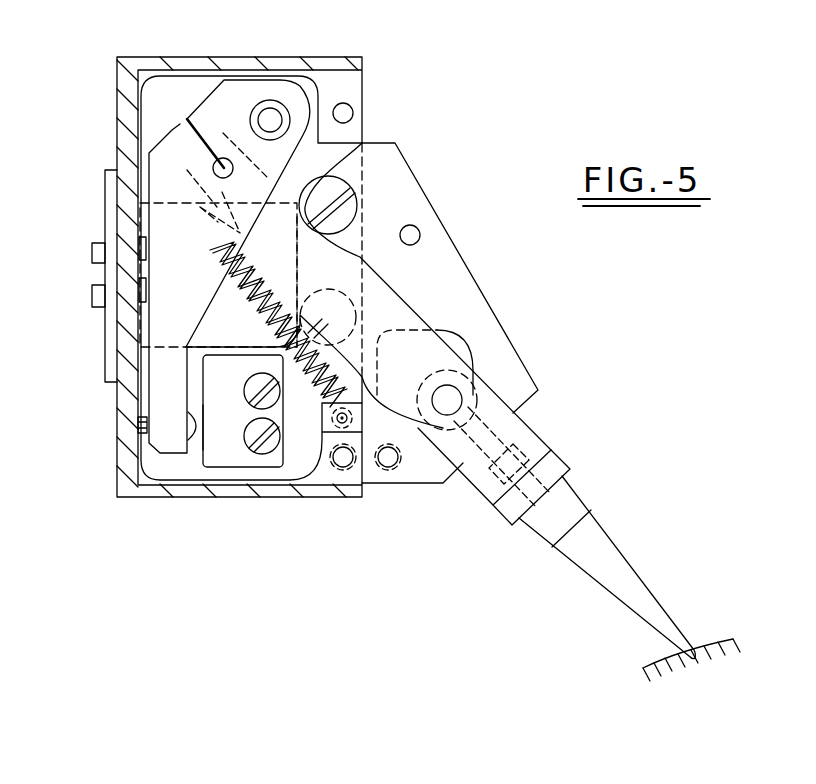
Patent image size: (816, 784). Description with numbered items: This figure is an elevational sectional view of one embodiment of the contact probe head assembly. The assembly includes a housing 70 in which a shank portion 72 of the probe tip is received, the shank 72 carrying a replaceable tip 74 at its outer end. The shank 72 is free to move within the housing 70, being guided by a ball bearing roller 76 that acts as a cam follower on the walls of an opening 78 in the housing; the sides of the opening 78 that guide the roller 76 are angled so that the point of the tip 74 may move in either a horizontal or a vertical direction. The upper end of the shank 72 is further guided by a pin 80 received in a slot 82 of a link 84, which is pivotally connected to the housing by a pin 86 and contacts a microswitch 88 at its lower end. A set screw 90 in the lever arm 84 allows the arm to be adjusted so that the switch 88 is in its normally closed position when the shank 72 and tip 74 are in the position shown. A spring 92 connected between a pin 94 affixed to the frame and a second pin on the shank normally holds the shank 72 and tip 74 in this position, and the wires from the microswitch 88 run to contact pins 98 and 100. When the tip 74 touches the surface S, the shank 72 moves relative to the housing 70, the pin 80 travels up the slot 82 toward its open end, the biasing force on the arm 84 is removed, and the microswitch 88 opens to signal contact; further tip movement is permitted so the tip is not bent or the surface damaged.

The housing 70 is at (121, 109).
The shank portion 72 is at (385, 297).
The replaceable tip 74 is at (617, 559).
The ball bearing roller 76 is at (453, 377).
The opening 78 is at (433, 330).
The pin 80 is at (233, 173).
The slot 82 is at (188, 120).
The link 84 is at (230, 88).
The pin 86 is at (273, 112).
The microswitch 88 is at (242, 462).
The set screw 90 is at (120, 453).
The spring 92 is at (283, 430).
The pin 94 is at (352, 424).
The contact pin 98 is at (100, 243).
The contact pin 100 is at (92, 298).
The surface S is at (729, 652).